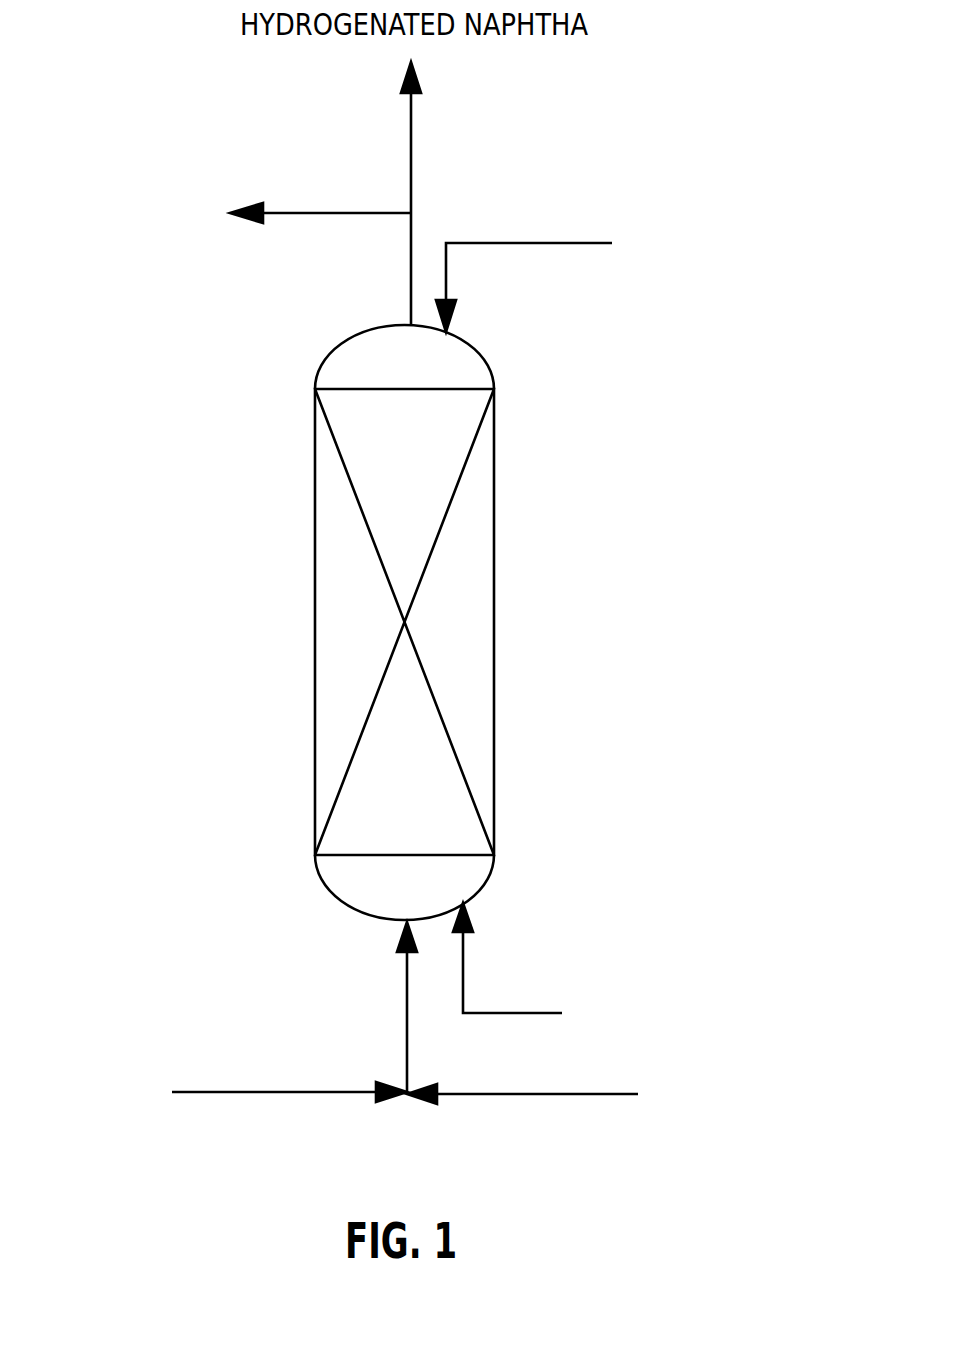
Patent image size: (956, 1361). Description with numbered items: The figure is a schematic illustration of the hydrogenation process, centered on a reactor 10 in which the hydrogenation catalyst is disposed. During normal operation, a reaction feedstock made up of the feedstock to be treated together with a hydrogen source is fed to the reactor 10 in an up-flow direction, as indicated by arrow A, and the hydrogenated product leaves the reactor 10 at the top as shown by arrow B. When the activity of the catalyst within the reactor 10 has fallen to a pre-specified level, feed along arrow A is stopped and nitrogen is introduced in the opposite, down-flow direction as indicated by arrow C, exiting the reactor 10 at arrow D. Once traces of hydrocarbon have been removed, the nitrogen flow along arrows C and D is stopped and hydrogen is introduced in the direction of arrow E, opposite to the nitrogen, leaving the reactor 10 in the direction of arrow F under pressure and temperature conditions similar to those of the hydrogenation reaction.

The reactor 10 is at (545, 480).
The arrow A is at (298, 1092).
The arrow B is at (411, 167).
The arrow C is at (485, 243).
The arrow D is at (463, 980).
The arrow E is at (498, 1094).
The arrow F is at (337, 213).